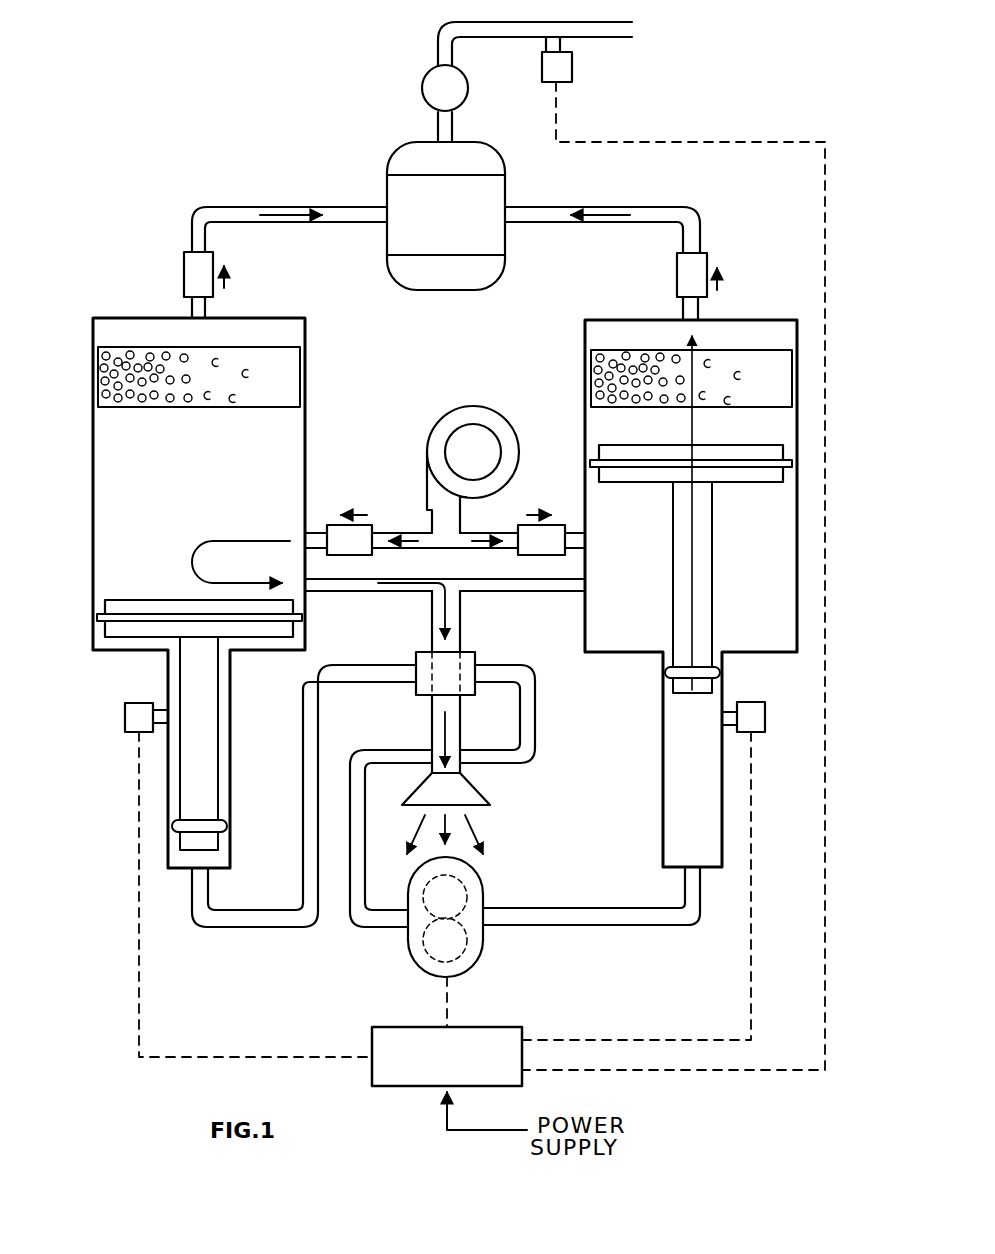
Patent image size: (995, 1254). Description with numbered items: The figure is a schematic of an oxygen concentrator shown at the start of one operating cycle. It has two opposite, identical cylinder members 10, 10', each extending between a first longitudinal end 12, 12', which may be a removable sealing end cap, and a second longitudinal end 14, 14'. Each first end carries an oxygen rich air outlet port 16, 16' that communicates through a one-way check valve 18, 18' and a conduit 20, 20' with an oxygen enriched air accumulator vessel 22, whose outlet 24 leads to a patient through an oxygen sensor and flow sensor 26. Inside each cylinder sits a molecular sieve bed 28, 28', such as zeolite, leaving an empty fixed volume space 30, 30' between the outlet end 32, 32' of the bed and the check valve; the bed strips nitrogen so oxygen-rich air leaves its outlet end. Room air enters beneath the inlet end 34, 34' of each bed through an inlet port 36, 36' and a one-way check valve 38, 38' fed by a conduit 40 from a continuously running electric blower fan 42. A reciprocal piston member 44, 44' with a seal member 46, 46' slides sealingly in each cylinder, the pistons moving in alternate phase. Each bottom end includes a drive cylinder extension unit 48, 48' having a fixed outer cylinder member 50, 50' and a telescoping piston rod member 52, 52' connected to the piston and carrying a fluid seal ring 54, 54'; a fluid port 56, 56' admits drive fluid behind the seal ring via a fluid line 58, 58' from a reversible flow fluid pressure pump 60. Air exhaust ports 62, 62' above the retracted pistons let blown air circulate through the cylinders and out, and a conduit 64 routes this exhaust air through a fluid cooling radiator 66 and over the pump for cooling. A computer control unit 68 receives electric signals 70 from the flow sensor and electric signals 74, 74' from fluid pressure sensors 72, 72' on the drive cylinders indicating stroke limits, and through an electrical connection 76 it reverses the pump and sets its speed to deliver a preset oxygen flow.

The cylinder member 10 is at (226, 661).
The cylinder member 10' is at (669, 655).
The first longitudinal end 12 is at (199, 566).
The first longitudinal end 12' is at (691, 568).
The second longitudinal end 14 is at (267, 677).
The second longitudinal end 14' is at (607, 677).
The oxygen rich air outlet port 16 is at (169, 304).
The oxygen rich air outlet port 16' is at (722, 305).
The one-way check valve 18 is at (180, 266).
The one-way check valve 18' is at (664, 275).
The conduit 20 is at (289, 204).
The conduit 20' is at (602, 204).
The oxygen enriched air accumulator vessel 22 is at (445, 290).
The outlet 24 is at (438, 128).
The oxygen sensor and flow sensor 26 is at (572, 67).
The molecular sieve bed 28 is at (227, 392).
The molecular sieve bed 28' is at (660, 395).
The fixed volume space 30 is at (320, 333).
The fixed volume space 30' is at (567, 333).
The outlet end of sieve bed 32 is at (252, 316).
The outlet end of sieve bed 32' is at (638, 319).
The inlet end of sieve bed 34 is at (174, 394).
The inlet end of sieve bed 34' is at (685, 396).
The inlet port 36 is at (345, 516).
The inlet port 36' is at (549, 516).
The one-way check valve 38 is at (379, 515).
The one-way check valve 38' is at (512, 515).
The conduit 40 is at (440, 549).
The electric blower fan 42 is at (470, 406).
The reciprocal piston member 44 is at (199, 591).
The reciprocal piston member 44' is at (691, 476).
The seal member 46 is at (199, 591).
The seal member 46' is at (691, 483).
The drive cylinder extension unit 48 is at (185, 743).
The drive cylinder extension unit 48' is at (670, 583).
The fixed outer cylinder member 50 is at (259, 727).
The fixed outer cylinder member 50' is at (629, 768).
The piston rod member 52 is at (228, 743).
The piston rod member 52' is at (723, 514).
The fluid seal ring 54 is at (199, 800).
The fluid seal ring 54' is at (692, 700).
The fluid port 56 is at (236, 878).
The fluid port 56' is at (652, 878).
The fluid line 58 is at (304, 821).
The fluid line 58' is at (525, 796).
The reversible flow fluid pressure pump 60 is at (408, 945).
The air exhaust port 62 is at (445, 602).
The air exhaust port 62' is at (551, 609).
The conduit 64 is at (400, 592).
The fluid cooling radiator 66 is at (416, 695).
The computer control unit 68 is at (500, 1027).
The electric signals 70 is at (825, 870).
The fluid pressure sensor 72 is at (132, 695).
The fluid pressure sensor 72' is at (769, 704).
The electric signals 74 is at (255, 894).
The electric signals 74' is at (636, 886).
The electrical connection 76 is at (447, 1007).